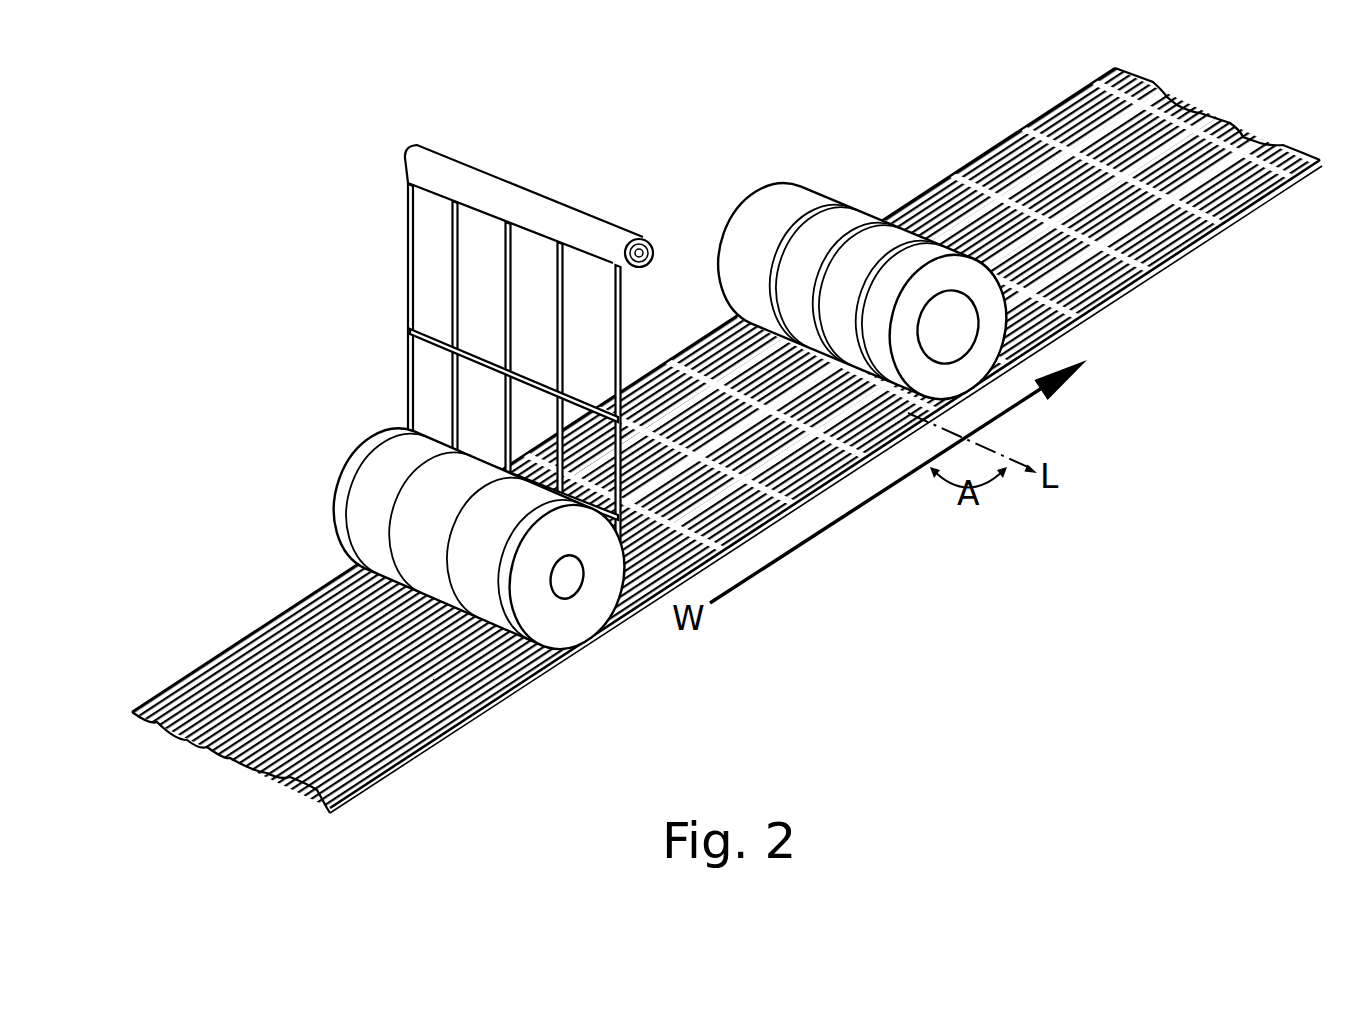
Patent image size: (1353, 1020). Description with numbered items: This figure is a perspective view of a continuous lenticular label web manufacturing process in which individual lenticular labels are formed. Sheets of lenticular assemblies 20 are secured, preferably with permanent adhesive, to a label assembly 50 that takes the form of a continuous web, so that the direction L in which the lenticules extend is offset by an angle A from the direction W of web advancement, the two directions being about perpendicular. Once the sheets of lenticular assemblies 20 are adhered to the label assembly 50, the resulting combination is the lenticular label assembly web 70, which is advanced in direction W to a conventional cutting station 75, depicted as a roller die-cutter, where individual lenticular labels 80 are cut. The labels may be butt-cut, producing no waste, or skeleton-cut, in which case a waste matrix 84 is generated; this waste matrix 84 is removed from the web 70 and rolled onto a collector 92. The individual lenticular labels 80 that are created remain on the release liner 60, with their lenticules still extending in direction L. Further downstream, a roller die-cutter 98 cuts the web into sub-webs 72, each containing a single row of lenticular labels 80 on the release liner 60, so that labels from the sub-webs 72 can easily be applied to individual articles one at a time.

The lenticular assemblies 20 is at (350, 618).
The label assembly 50 is at (727, 448).
The release liner 60 is at (1093, 303).
The lenticular label assembly web 70 is at (390, 788).
The sub-webs 72 is at (1160, 85).
The cutting station 75 is at (580, 627).
The lenticular labels 80 is at (990, 173).
The waste matrix 84 is at (495, 341).
The collector 92 is at (653, 240).
The roller die-cutter 98 is at (957, 373).